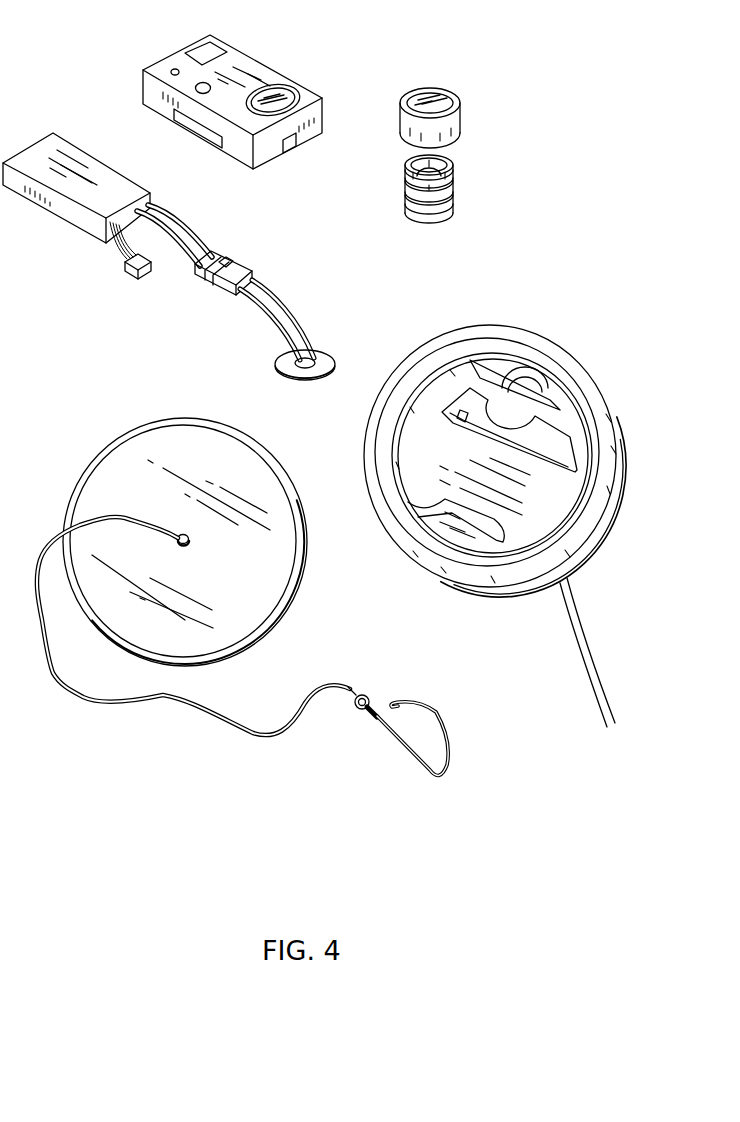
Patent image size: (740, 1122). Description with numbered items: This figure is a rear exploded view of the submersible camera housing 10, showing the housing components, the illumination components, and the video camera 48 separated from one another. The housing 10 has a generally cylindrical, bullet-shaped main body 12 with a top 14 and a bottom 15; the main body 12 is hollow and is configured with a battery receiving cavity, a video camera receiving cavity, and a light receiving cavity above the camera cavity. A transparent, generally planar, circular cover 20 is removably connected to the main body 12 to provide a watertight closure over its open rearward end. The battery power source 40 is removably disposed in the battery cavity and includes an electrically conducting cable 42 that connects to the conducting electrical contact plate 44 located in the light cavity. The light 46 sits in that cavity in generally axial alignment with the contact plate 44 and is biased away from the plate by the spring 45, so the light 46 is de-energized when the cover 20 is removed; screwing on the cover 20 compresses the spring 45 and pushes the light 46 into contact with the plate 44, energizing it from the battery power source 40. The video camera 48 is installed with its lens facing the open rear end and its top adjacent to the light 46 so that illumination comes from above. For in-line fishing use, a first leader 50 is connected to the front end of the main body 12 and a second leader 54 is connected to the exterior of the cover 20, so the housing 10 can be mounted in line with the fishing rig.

The submersible camera housing 10 is at (514, 481).
The main body 12 is at (468, 580).
The top 14 is at (605, 407).
The bottom 15 is at (608, 537).
The cover 20 is at (102, 462).
The battery power source 40 is at (53, 137).
The electrically conducting cable 42 is at (220, 250).
The conducting electrical contact plate 44 is at (307, 380).
The spring 45 is at (405, 216).
The light 46 is at (435, 155).
The video camera 48 is at (250, 68).
The first leader 50 is at (590, 669).
The second leader 54 is at (65, 688).